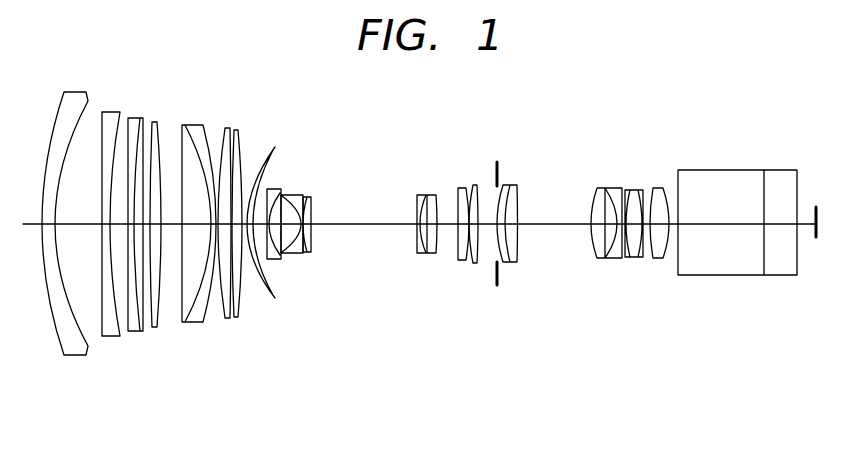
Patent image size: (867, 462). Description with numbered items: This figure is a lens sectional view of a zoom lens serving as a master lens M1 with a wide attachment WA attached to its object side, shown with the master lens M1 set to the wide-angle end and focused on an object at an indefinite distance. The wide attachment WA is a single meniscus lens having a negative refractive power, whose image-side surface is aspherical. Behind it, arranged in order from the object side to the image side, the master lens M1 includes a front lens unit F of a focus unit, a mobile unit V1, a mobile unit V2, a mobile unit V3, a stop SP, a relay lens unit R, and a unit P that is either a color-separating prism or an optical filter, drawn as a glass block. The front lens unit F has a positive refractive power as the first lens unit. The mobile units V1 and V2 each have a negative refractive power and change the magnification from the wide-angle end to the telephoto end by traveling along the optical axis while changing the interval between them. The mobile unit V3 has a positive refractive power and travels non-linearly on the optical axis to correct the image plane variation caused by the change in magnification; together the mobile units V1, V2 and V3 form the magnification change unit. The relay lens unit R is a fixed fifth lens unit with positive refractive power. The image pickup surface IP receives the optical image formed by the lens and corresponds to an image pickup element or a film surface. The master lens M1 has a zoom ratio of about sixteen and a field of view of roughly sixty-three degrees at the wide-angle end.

The wide attachment WA is at (38, 385).
The front lens unit F is at (267, 347).
The mobile unit V1 is at (265, 305).
The mobile unit V2 is at (417, 287).
The mobile unit V3 is at (482, 287).
The stop SP is at (497, 162).
The relay lens unit R is at (500, 287).
The unit P is at (724, 170).
The image pickup surface IP is at (816, 207).
The master lens M1 is at (97, 385).